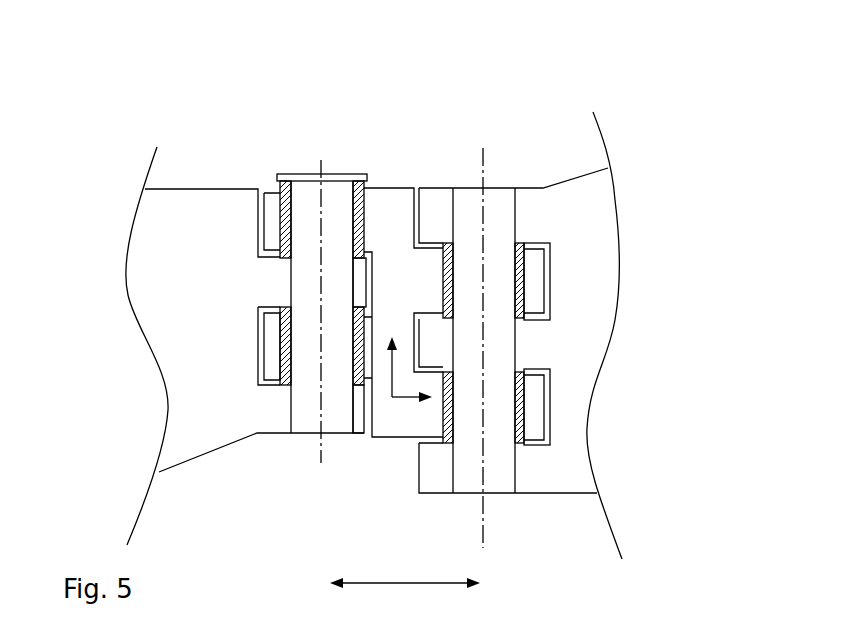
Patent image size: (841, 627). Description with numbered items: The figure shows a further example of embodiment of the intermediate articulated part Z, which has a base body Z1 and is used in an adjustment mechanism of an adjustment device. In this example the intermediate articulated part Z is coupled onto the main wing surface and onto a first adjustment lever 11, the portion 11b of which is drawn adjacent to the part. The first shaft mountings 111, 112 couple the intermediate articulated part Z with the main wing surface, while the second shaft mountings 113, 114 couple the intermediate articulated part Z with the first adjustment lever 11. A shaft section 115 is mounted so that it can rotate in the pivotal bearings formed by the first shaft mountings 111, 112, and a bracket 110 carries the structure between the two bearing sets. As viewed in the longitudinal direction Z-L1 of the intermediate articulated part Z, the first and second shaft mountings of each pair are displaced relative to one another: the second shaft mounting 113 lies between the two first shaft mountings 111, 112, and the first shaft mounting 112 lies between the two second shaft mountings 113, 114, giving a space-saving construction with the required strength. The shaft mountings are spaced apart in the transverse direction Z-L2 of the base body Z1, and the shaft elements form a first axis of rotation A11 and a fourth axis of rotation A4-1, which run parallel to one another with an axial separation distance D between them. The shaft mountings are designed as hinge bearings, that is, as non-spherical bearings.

The first adjustment lever 11 is at (150, 313).
The vehicle body member portion 11b is at (500, 200).
The bracket 110 is at (390, 437).
The first shaft mounting 111 is at (362, 193).
The first shaft mounting 112 is at (365, 333).
The second shaft mounting 113 is at (522, 267).
The second shaft mounting 114 is at (522, 407).
The shaft section 115 is at (308, 183).
The first axis of rotation A11 is at (320, 452).
The fourth axis of rotation A4-1 is at (483, 540).
The intermediate articulated part Z is at (416, 60).
The base body Z1 is at (412, 160).
The longitudinal direction Z-L1 is at (393, 359).
The transverse direction Z-L2 is at (406, 408).
The axial separation distance D is at (405, 573).